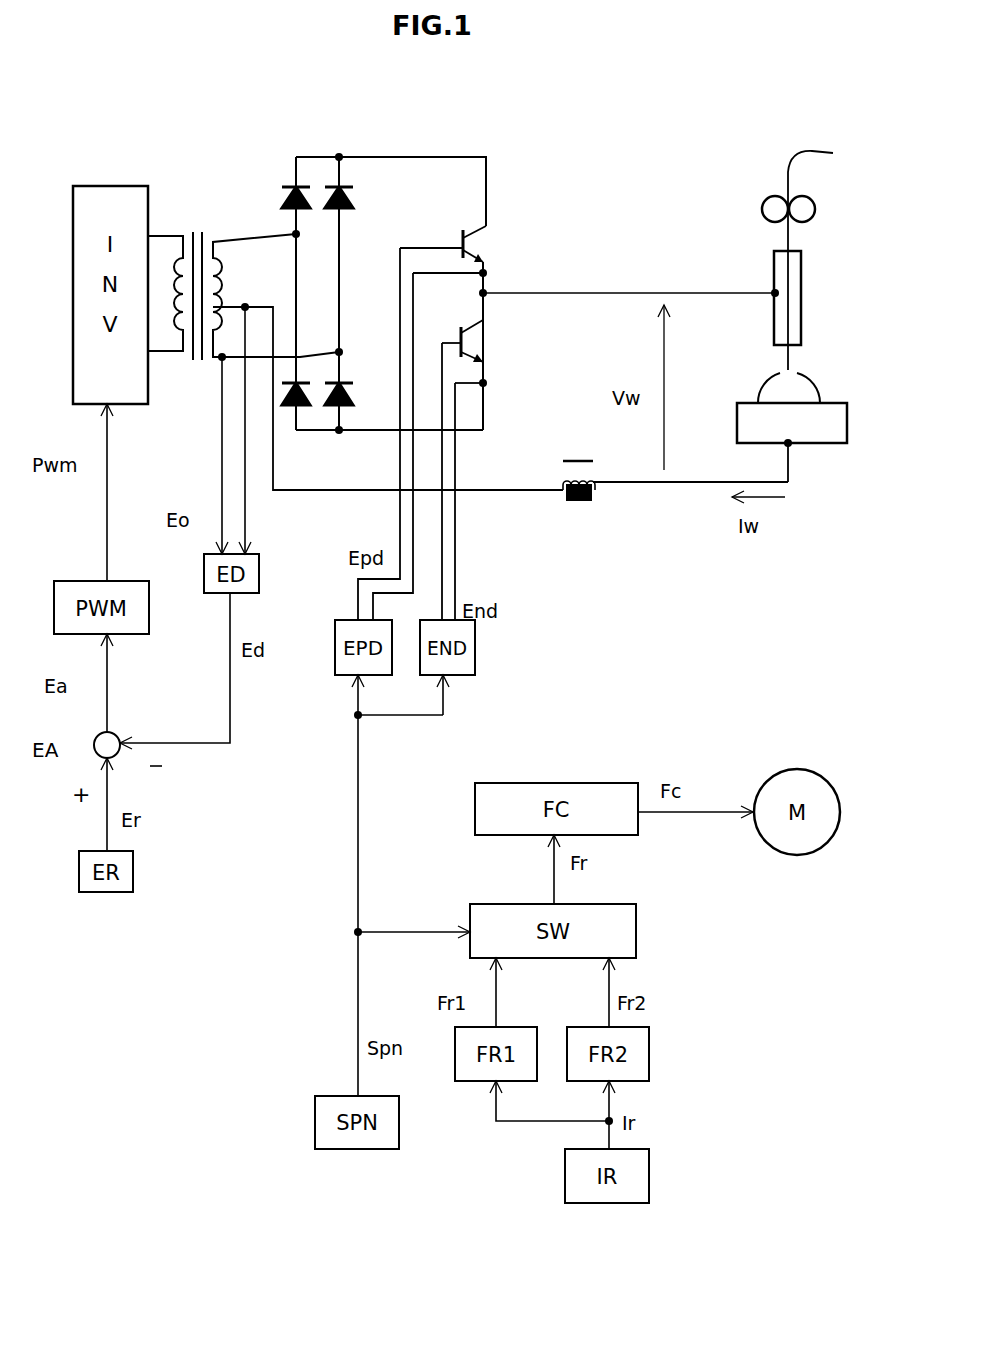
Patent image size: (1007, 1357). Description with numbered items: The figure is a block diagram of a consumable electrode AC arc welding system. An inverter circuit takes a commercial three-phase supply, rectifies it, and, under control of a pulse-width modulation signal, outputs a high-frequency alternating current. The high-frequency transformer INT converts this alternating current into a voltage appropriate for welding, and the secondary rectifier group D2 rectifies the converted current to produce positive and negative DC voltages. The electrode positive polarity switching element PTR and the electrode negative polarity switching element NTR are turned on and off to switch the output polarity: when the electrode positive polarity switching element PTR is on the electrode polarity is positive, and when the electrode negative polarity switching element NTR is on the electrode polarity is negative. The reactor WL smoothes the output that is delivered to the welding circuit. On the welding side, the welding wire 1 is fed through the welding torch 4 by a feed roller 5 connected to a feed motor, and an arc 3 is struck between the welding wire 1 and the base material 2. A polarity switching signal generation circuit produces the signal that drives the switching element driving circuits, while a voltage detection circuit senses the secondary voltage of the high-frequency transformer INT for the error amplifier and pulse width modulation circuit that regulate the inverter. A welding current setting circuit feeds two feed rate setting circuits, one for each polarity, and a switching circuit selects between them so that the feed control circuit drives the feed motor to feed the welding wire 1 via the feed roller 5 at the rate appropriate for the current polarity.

The welding wire 1 is at (790, 359).
The base material 2 is at (828, 445).
The arc 3 is at (760, 387).
The welding torch 4 is at (775, 265).
The feed roller 5 is at (770, 207).
The secondary rectifier group D2 is at (317, 197).
The high-frequency transformer INT is at (192, 233).
The electrode positive polarity switching element PTR is at (443, 238).
The electrode negative polarity switching element NTR is at (454, 334).
The reactor WL is at (574, 503).